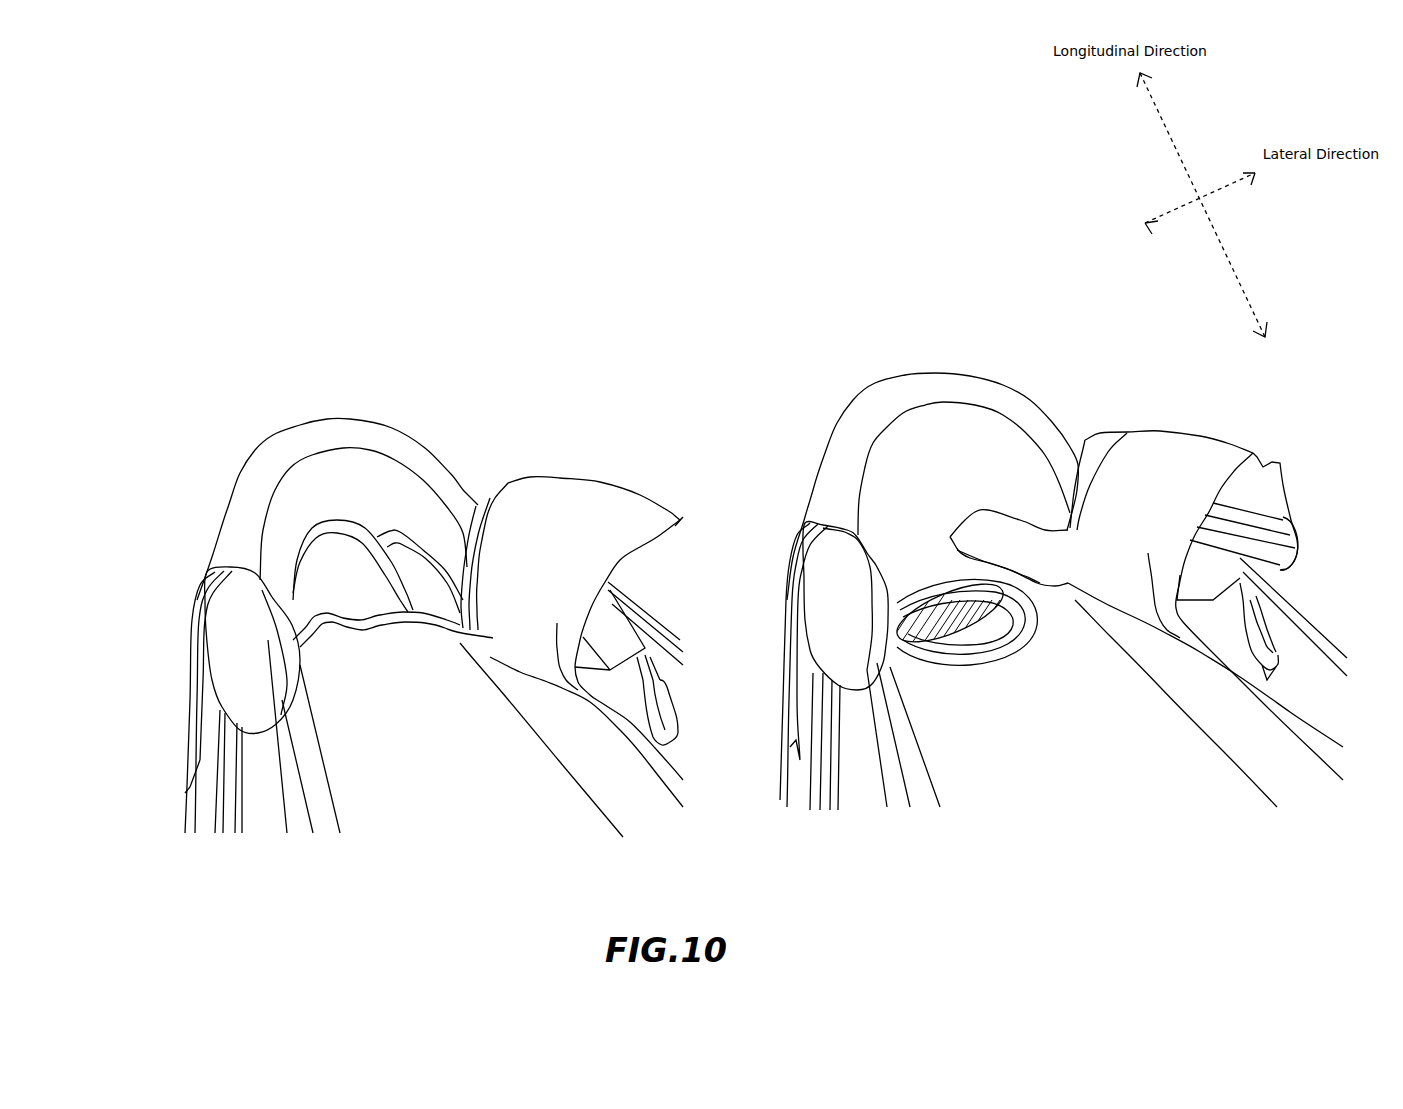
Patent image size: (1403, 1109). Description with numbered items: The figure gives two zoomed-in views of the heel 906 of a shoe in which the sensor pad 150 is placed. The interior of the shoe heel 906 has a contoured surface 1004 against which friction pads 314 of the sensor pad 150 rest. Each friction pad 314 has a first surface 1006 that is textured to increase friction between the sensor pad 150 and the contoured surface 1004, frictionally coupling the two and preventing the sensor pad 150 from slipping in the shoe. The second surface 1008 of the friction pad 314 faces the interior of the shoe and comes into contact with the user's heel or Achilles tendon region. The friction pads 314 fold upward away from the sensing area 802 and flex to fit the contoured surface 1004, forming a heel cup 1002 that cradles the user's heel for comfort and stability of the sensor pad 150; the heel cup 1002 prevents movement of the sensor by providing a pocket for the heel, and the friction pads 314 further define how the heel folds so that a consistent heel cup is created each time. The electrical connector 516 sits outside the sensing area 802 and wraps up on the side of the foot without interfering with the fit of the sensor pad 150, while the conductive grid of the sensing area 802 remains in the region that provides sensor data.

The shoe heel 906 is at (822, 450).
The heel cup 1002 is at (437, 587).
The sensor pad 150 is at (937, 708).
The electrical connector 516 is at (588, 497).
The second surface 1008 is at (343, 600).
The sensing area 802 is at (393, 701).
The contoured surface 1004 is at (1003, 460).
The first surface 1006 is at (987, 618).
The friction pad 314 is at (963, 623).